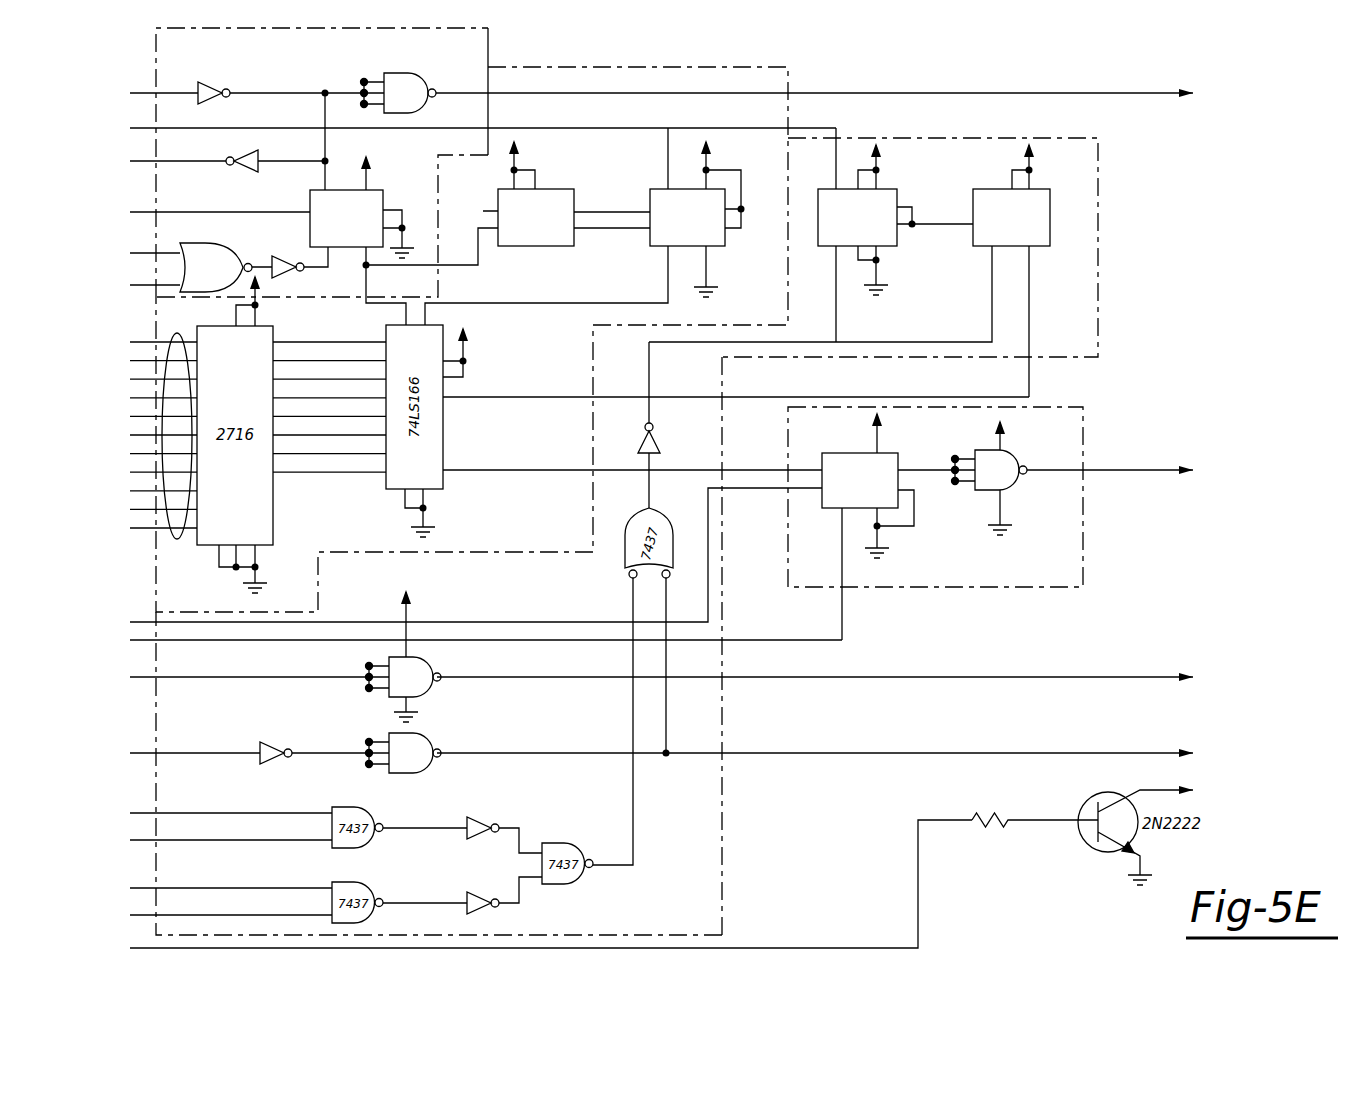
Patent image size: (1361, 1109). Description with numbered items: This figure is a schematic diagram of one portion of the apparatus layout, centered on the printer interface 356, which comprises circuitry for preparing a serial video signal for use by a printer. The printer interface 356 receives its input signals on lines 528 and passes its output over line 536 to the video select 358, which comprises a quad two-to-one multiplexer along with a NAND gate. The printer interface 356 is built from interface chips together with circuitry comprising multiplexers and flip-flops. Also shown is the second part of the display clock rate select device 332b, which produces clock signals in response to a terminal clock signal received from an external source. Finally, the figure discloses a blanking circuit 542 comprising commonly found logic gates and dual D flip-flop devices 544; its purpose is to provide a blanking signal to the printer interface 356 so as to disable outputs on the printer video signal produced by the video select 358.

The display clock rate select device part 332b is at (490, 57).
The printer interface 356 is at (790, 80).
The dual D flip-flop devices 544 is at (897, 240).
The lines 528 is at (177, 540).
The line 536 is at (778, 436).
The video select 358 is at (1085, 422).
The blanking circuit 542 is at (724, 797).